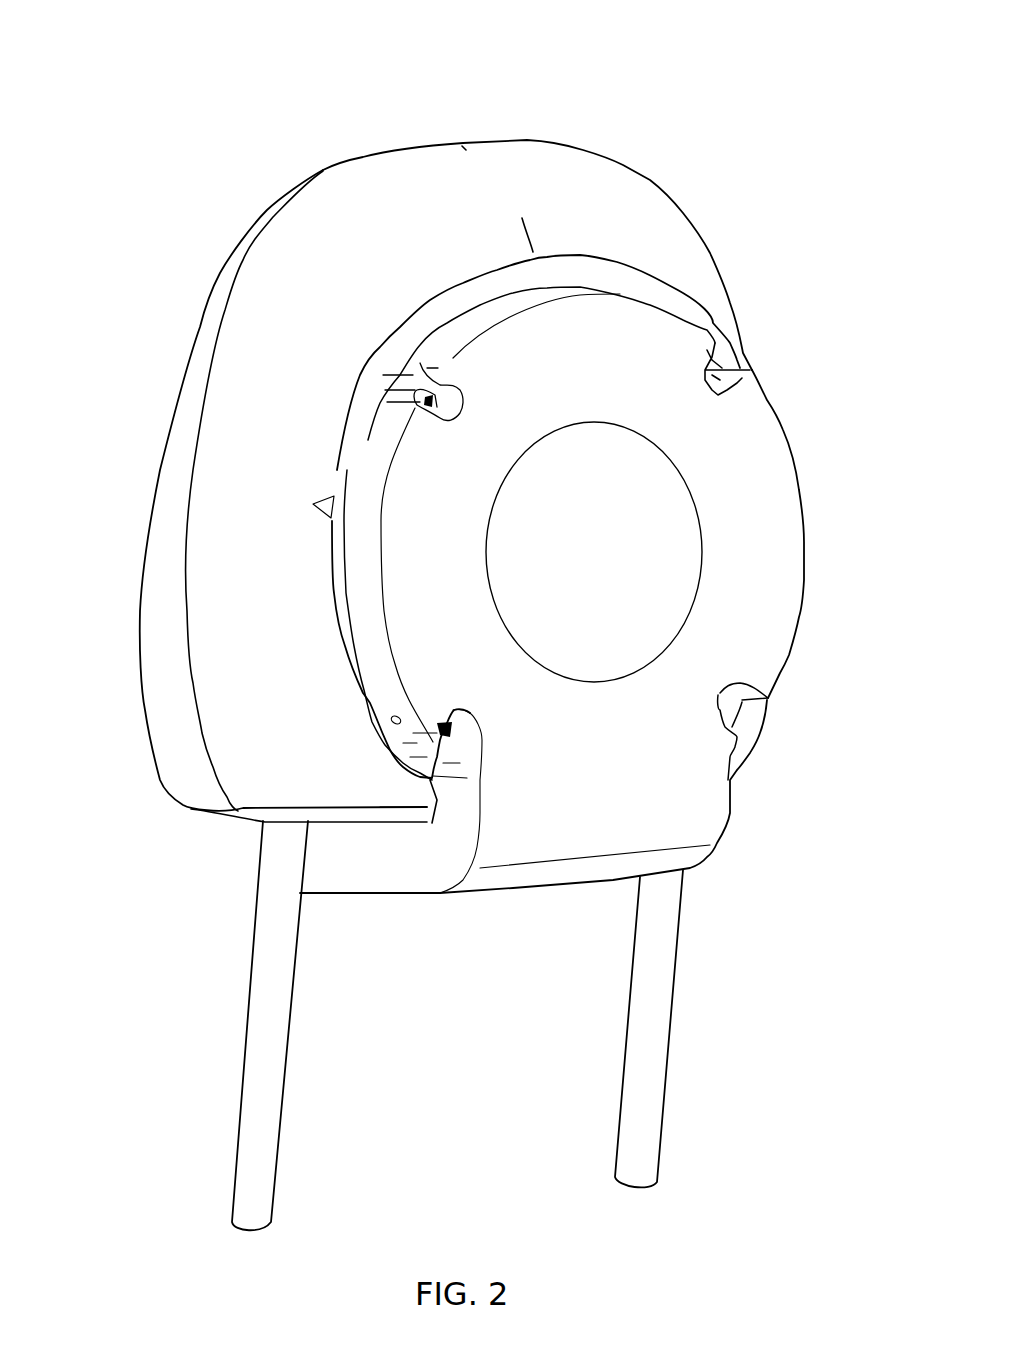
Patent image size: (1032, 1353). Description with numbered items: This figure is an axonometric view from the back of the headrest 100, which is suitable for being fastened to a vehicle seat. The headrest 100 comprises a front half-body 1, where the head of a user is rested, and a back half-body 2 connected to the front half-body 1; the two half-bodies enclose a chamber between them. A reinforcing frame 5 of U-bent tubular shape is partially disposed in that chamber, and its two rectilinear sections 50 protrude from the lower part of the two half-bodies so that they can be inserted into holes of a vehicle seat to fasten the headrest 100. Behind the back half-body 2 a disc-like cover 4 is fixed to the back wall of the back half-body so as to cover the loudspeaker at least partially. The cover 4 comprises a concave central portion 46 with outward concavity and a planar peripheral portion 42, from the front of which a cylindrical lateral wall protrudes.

The headrest 100 is at (643, 125).
The front half-body 1 is at (150, 497).
The back half-body 2 is at (652, 213).
The cover 4 is at (816, 505).
The planar peripheral portion 42 is at (750, 428).
The concave central portion 46 is at (665, 575).
The reinforcing frame 5 is at (195, 1027).
The rectilinear sections 50 is at (270, 1118).